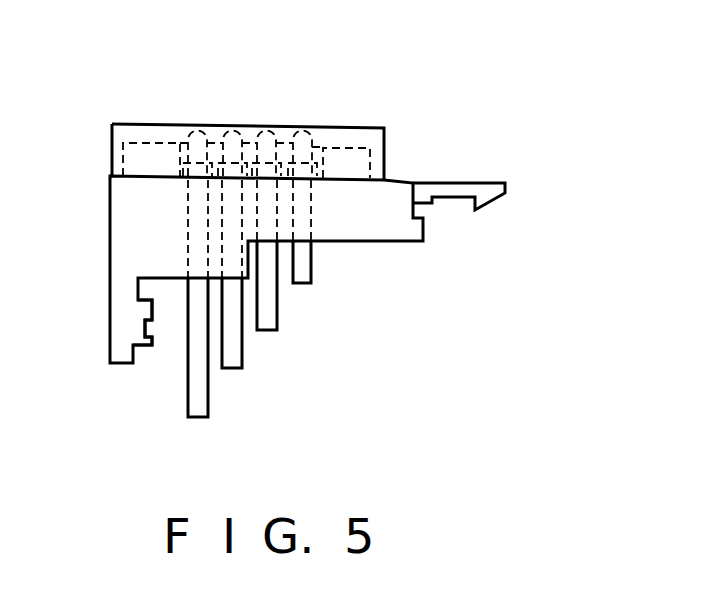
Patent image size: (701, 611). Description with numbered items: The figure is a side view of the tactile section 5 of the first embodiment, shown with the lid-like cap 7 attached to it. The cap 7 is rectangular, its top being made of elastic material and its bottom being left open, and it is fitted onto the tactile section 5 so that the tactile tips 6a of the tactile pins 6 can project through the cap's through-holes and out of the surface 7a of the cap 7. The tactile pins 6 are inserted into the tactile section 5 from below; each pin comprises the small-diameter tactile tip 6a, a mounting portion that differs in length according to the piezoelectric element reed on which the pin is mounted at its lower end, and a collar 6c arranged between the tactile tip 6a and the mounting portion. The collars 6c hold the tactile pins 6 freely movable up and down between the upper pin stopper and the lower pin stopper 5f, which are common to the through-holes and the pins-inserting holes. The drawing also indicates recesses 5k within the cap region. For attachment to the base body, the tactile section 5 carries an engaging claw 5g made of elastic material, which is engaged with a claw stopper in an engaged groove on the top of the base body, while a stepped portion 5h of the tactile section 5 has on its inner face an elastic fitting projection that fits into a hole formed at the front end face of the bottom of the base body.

The tactile section 5 is at (108, 273).
The lower pin stopper 5f is at (112, 173).
The engaging claw 5g is at (466, 182).
The stepped portion 5h is at (148, 349).
The recess 5k is at (145, 143).
The tactile pin 6 is at (208, 407).
The tactile tip 6a is at (198, 132).
The collar 6c is at (312, 180).
The cap 7 is at (386, 151).
The surface of the cap 7a is at (320, 127).